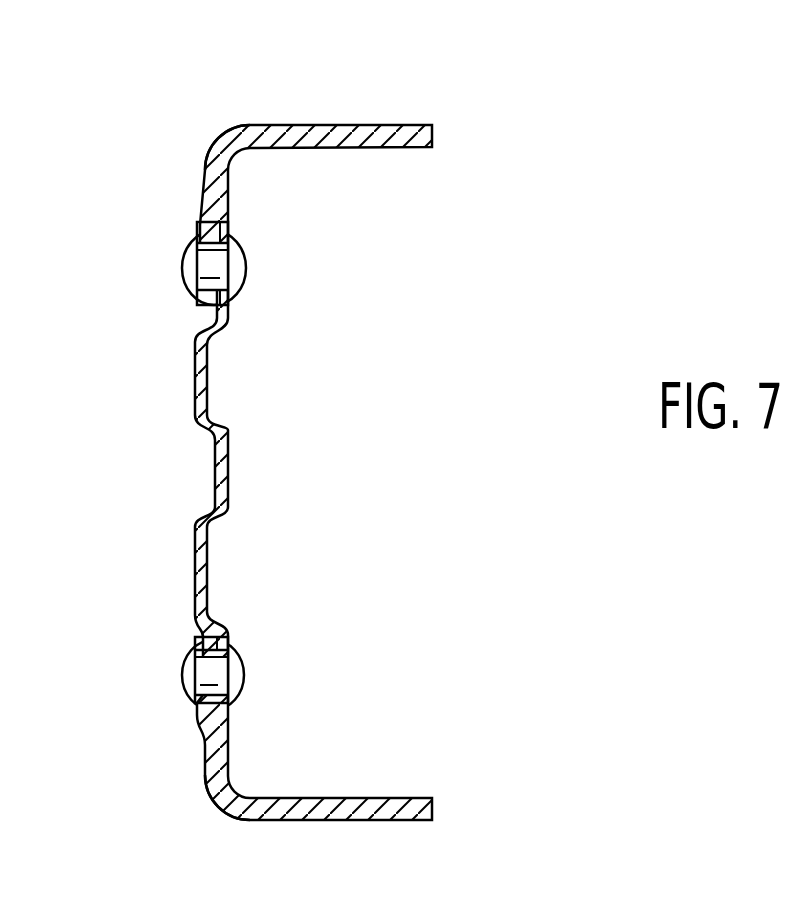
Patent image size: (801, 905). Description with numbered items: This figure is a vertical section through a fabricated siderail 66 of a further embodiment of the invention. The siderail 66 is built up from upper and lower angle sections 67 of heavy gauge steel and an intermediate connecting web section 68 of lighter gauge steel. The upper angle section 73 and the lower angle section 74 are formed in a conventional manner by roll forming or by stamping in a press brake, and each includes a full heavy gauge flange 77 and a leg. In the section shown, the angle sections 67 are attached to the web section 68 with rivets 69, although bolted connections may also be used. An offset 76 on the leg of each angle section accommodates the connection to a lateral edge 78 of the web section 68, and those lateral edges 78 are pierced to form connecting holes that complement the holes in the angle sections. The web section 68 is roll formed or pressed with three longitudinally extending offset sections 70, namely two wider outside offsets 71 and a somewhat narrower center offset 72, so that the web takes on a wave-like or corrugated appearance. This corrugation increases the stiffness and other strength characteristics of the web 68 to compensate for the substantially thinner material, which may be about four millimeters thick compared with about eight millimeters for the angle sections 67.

The fabricated siderail 66 is at (264, 457).
The angle sections 67 is at (395, 115).
The intermediate connecting web section 68 is at (258, 472).
The rivets 69 is at (247, 268).
The offset sections 70 is at (195, 373).
The outside offsets 71 is at (207, 355).
The center offset 72 is at (215, 475).
The upper angle section 73 is at (247, 128).
The lower angle section 74 is at (280, 820).
The offset 76 is at (198, 225).
The flange 77 is at (333, 150).
The lateral edge 78 is at (230, 223).